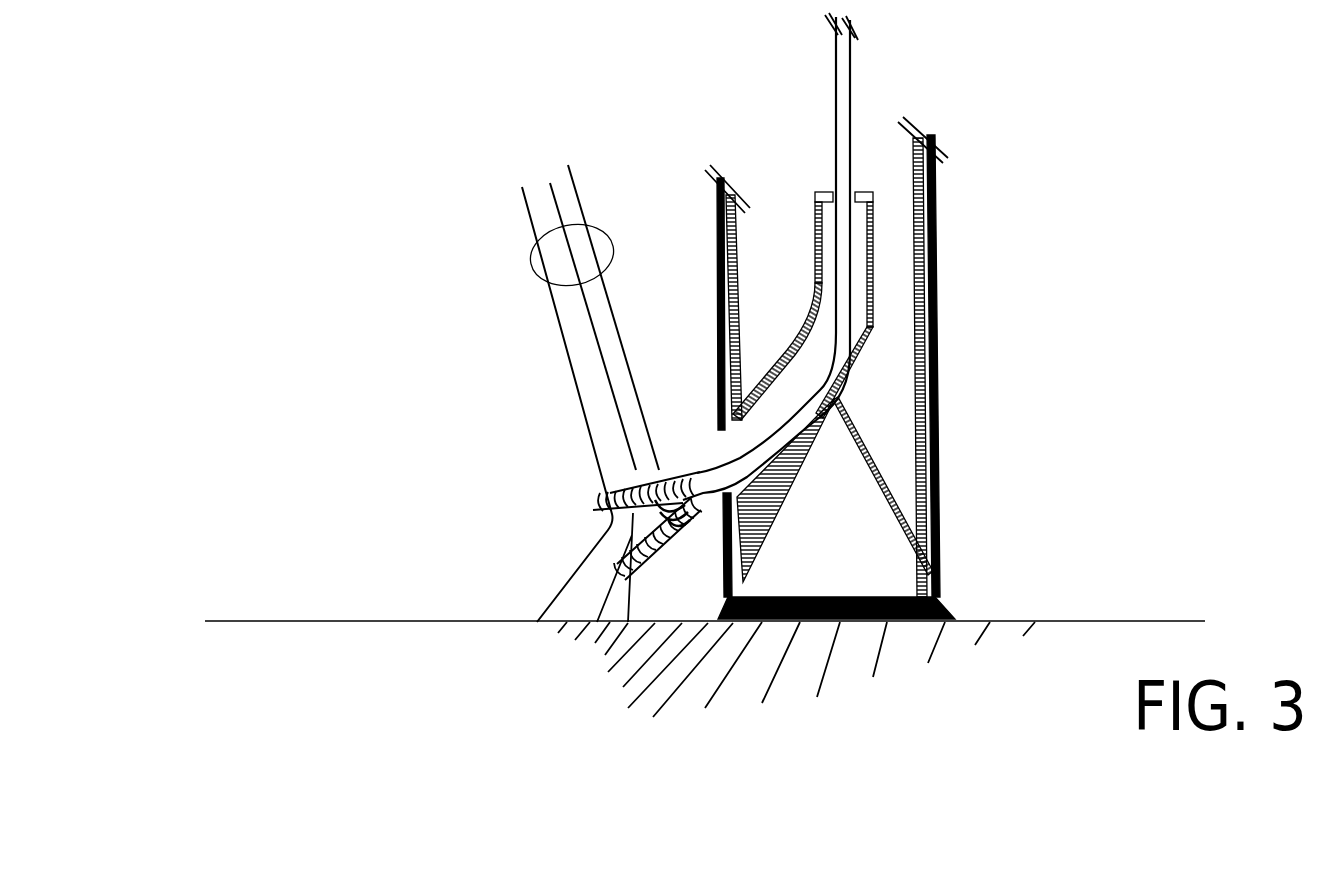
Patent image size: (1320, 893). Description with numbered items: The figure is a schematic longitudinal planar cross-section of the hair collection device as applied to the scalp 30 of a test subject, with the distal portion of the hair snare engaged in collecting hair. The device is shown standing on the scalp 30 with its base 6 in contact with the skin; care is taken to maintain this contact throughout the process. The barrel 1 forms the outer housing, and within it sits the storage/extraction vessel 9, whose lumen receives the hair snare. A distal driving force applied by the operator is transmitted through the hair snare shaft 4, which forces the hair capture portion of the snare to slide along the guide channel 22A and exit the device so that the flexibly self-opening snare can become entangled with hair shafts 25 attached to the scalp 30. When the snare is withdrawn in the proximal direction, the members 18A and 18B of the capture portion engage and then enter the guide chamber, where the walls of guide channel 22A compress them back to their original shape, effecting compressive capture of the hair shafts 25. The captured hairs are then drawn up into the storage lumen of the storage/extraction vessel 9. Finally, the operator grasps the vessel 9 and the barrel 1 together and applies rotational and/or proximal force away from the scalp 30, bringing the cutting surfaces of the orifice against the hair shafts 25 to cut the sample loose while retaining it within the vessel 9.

The barrel 1 is at (937, 335).
The hair snare shaft 4 is at (847, 83).
The hair collection device base 6 is at (958, 592).
The storage/extraction vessel 9 is at (923, 288).
The member 18A is at (618, 482).
The member 18B is at (645, 557).
The guide channel 22A is at (753, 393).
The hair shafts 25 is at (540, 287).
The scalp 30 is at (943, 707).